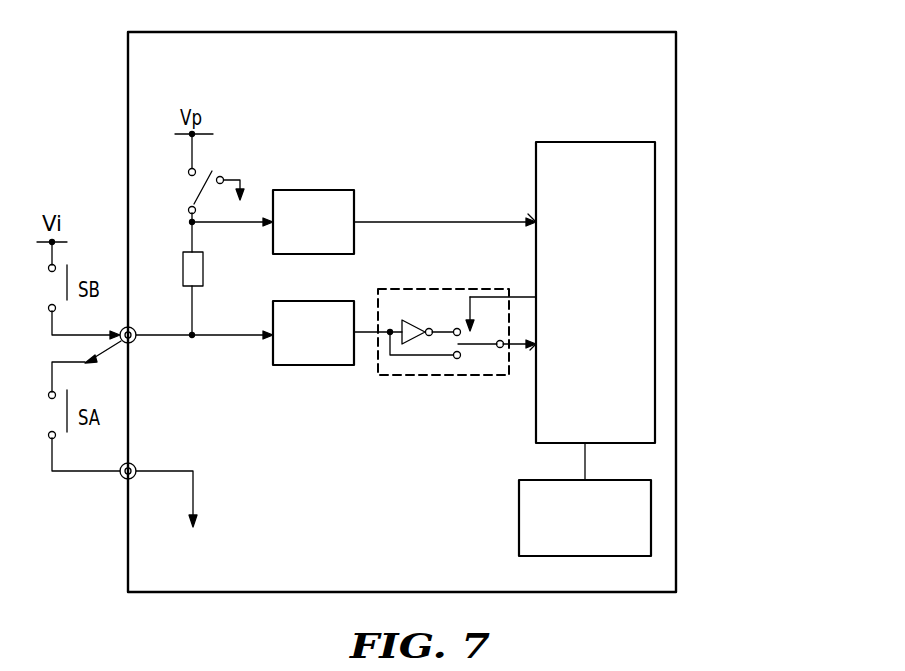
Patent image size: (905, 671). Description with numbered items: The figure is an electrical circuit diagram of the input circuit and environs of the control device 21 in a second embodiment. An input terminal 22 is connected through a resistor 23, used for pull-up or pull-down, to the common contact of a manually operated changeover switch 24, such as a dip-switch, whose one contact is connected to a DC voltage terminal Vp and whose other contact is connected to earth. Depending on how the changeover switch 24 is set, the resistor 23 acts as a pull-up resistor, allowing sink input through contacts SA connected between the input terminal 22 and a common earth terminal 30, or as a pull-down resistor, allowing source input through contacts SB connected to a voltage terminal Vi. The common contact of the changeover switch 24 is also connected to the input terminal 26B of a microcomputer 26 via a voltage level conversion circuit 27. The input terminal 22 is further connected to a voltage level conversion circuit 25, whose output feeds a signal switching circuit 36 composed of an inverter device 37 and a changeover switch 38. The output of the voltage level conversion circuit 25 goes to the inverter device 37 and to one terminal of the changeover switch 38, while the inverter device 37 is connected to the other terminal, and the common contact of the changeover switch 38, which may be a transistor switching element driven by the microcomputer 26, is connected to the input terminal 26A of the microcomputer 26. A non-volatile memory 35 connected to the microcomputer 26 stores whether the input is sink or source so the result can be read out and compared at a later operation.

The control device 21 is at (570, 0).
The input terminal 22 is at (134, 341).
The resistor 23 is at (203, 268).
The changeover switch 24 is at (183, 194).
The voltage level conversion circuit 25 is at (325, 365).
The microcomputer 26 is at (585, 142).
The input terminal of microcomputer 26A is at (533, 352).
The input terminal of microcomputer 26B is at (533, 213).
The voltage level conversion circuit 27 is at (320, 190).
The common earth terminal 30 is at (121, 480).
The non-volatile memory 35 is at (519, 517).
The signal switching circuit 36 is at (443, 341).
The inverter device 37 is at (406, 320).
The changeover switch 38 is at (482, 372).